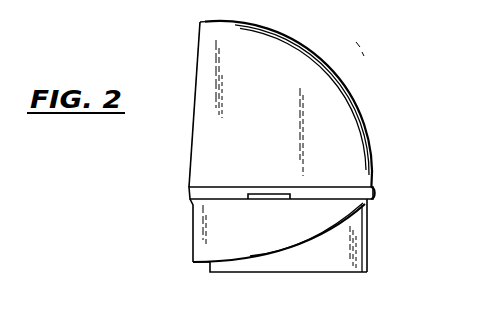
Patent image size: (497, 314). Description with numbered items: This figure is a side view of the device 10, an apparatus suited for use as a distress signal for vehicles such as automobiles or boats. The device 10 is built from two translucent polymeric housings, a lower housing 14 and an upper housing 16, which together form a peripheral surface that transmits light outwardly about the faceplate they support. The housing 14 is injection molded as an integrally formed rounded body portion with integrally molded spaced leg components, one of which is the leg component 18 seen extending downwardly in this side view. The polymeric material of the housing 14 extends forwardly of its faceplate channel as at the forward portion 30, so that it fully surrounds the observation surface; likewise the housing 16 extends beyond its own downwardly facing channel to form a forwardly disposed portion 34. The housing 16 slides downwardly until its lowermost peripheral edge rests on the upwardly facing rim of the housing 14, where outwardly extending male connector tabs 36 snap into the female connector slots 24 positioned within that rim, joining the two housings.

The device 10 is at (434, 73).
The housing 14 is at (202, 263).
The housing 16 is at (350, 120).
The leg component 18 is at (359, 248).
The female connector slot 24 is at (290, 200).
The forwardly extending portion of housing 30 is at (191, 230).
The forwardly disposed portion 34 is at (198, 50).
The male connector tab 36 is at (268, 200).